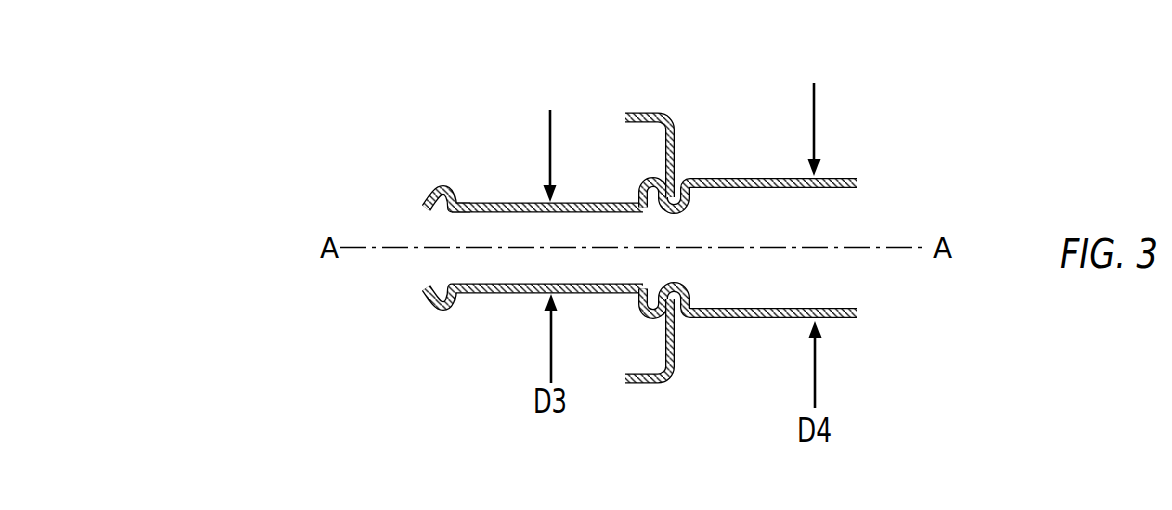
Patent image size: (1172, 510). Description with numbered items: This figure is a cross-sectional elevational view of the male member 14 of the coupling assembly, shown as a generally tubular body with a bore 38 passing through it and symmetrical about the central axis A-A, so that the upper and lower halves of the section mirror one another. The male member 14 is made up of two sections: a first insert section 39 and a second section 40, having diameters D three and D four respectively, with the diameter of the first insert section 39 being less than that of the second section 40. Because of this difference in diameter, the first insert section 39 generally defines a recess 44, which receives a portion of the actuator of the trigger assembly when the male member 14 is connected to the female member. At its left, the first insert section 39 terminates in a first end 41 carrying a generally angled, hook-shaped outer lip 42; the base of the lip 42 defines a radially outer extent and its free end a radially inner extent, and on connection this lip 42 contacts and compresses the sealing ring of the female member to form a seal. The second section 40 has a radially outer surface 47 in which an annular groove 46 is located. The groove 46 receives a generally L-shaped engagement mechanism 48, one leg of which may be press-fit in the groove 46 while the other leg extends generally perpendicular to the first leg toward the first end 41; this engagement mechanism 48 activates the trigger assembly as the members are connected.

The male member 14 is at (644, 208).
The bore 38 is at (644, 182).
The first insert section 39 is at (578, 300).
The second section 40 is at (712, 328).
The first end 41 is at (446, 216).
The outer lip 42 is at (424, 206).
The recess 44 is at (476, 203).
The annular groove 46 is at (663, 205).
The radially outer surface 47 is at (723, 177).
The engagement mechanism 48 is at (640, 113).